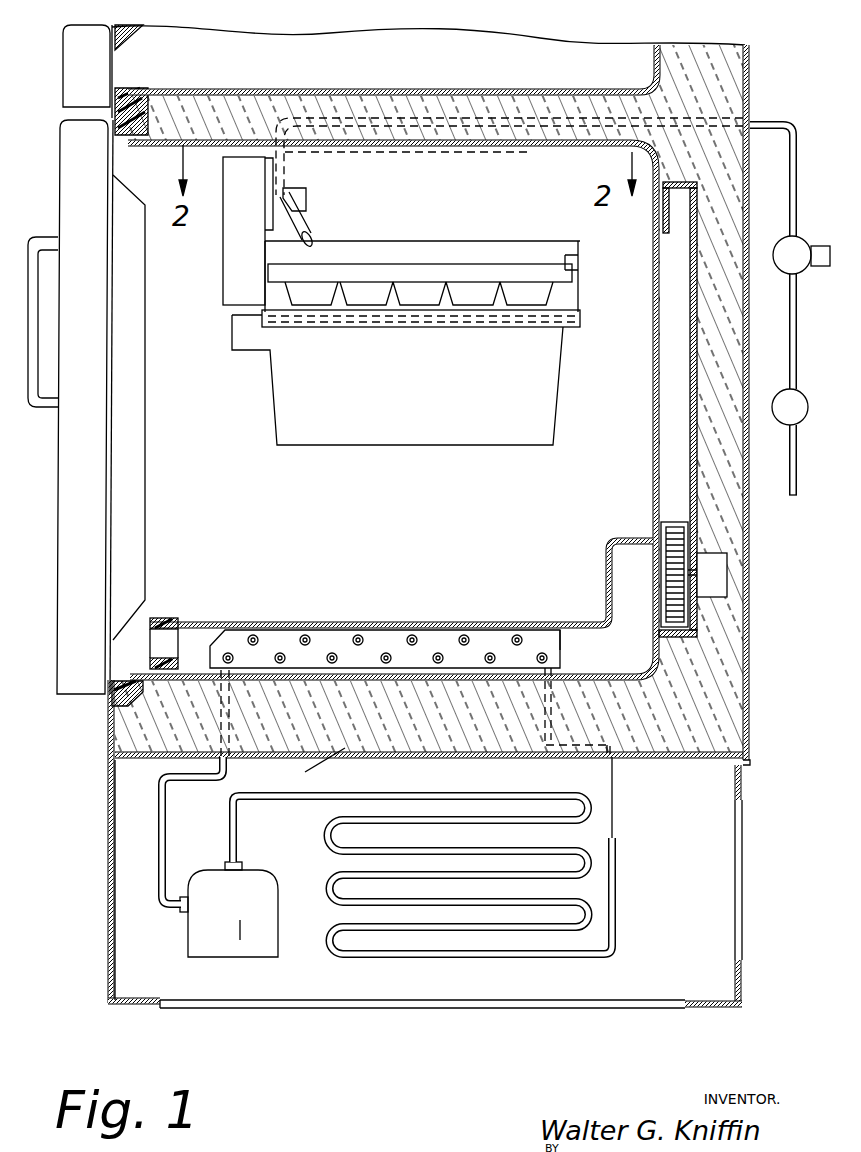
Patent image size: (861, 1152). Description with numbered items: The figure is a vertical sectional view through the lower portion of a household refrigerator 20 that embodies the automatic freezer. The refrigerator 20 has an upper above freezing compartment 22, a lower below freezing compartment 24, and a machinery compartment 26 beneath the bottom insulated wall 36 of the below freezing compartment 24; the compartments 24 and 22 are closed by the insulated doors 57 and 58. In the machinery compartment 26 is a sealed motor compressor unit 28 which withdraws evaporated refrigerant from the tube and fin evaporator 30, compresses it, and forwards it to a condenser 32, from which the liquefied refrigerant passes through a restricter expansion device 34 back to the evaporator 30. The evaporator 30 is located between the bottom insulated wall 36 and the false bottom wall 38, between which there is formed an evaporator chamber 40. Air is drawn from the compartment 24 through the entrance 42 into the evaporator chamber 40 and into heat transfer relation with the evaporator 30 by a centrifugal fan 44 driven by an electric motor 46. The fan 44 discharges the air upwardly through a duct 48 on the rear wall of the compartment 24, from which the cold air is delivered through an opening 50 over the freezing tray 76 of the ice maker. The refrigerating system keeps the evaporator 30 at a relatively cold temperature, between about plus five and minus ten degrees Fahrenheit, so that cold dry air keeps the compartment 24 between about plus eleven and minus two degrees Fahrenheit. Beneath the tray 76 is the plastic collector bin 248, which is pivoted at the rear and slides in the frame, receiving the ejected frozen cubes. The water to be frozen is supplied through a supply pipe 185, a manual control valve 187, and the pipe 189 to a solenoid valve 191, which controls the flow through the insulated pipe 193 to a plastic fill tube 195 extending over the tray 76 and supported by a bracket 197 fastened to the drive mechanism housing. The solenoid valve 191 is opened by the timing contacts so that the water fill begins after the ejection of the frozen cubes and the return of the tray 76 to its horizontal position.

The household refrigerator 20 is at (749, 60).
The above freezing compartment 22 is at (382, 65).
The below freezing compartment 24 is at (382, 538).
The machinery compartment 26 is at (659, 888).
The sealed motor compressor unit 28 is at (255, 892).
The tube and fin evaporator 30 is at (324, 640).
The condenser 32 is at (330, 938).
The restricter expansion device 34 is at (614, 802).
The bottom insulated wall 36 is at (429, 415).
The false bottom wall 38 is at (583, 622).
The evaporator chamber 40 is at (584, 668).
The entrance 42 is at (172, 640).
The centrifugal fan 44 is at (665, 522).
The electric motor 46 is at (715, 560).
The duct 48 is at (668, 418).
The opening 50 is at (663, 215).
The insulated door 57 is at (70, 521).
The insulated door 58 is at (72, 53).
The freezing tray 76 is at (498, 266).
The plastic collector bin 248 is at (365, 447).
The supply pipe 185 is at (793, 468).
The manual control valve 187 is at (806, 405).
The pipe 189 is at (792, 305).
The solenoid valve 191 is at (798, 238).
The insulated pipe 193 is at (791, 123).
The plastic fill tube 195 is at (303, 230).
The bracket 197 is at (293, 197).